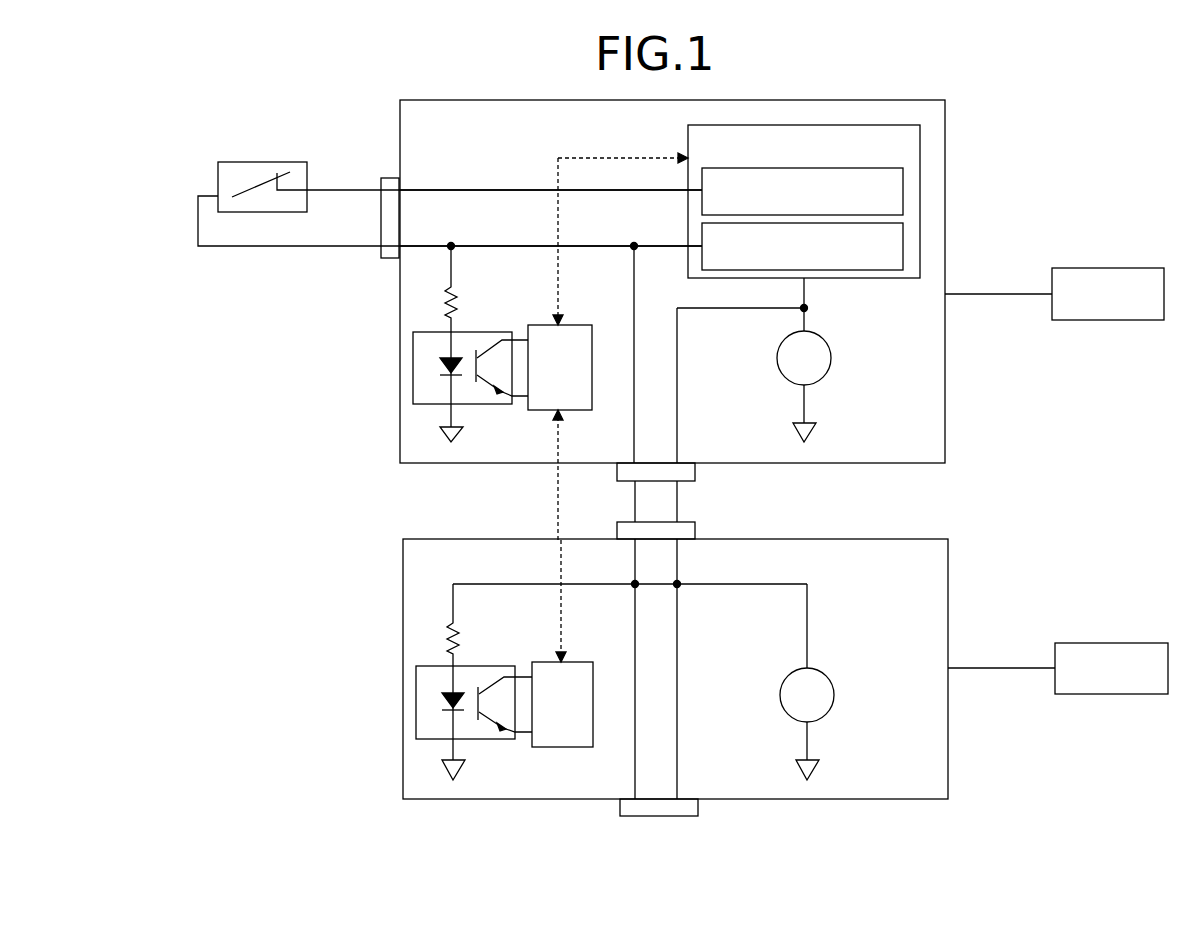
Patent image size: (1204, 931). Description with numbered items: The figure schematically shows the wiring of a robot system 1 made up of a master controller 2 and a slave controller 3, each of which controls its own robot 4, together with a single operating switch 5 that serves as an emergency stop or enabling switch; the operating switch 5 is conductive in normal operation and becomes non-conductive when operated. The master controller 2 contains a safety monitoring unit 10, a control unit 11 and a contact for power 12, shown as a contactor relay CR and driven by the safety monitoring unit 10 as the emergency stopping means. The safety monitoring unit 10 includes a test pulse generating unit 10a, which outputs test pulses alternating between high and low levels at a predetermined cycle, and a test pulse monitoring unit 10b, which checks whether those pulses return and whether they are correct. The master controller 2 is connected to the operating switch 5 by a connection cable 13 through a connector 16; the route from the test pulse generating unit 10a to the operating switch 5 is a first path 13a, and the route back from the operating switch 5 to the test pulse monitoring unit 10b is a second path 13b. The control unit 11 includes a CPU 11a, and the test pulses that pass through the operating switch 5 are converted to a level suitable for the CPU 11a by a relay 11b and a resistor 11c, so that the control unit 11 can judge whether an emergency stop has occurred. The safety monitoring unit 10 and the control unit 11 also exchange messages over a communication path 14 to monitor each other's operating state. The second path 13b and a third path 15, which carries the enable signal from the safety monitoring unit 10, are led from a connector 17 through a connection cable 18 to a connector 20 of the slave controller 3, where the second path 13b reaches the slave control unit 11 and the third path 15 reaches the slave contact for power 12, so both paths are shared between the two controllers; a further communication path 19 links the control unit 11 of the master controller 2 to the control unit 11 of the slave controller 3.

The robot system 1 is at (212, 398).
The master controller 2 is at (947, 130).
The slave controller 3 is at (948, 585).
The robot 4 is at (1107, 268).
The operating switch 5 is at (258, 162).
The safety monitoring unit 10 is at (818, 125).
The test pulse generating unit 10a is at (903, 190).
The test pulse monitoring unit 10b is at (903, 246).
The control unit 11 is at (510, 513).
The central processing unit (CPU) 11a is at (572, 325).
The relay 11b is at (501, 332).
The resistor 11c is at (461, 286).
The contact for power 12 is at (831, 358).
The connection cable 13 is at (354, 186).
The first path 13a is at (500, 190).
The second path 13b is at (500, 246).
The communication path 14 is at (631, 158).
The third path 15 is at (808, 304).
The connector 16 is at (390, 262).
The connector 17 is at (697, 470).
The connection cable 18 is at (694, 505).
The communication path 19 is at (567, 437).
The connector 20 is at (697, 531).